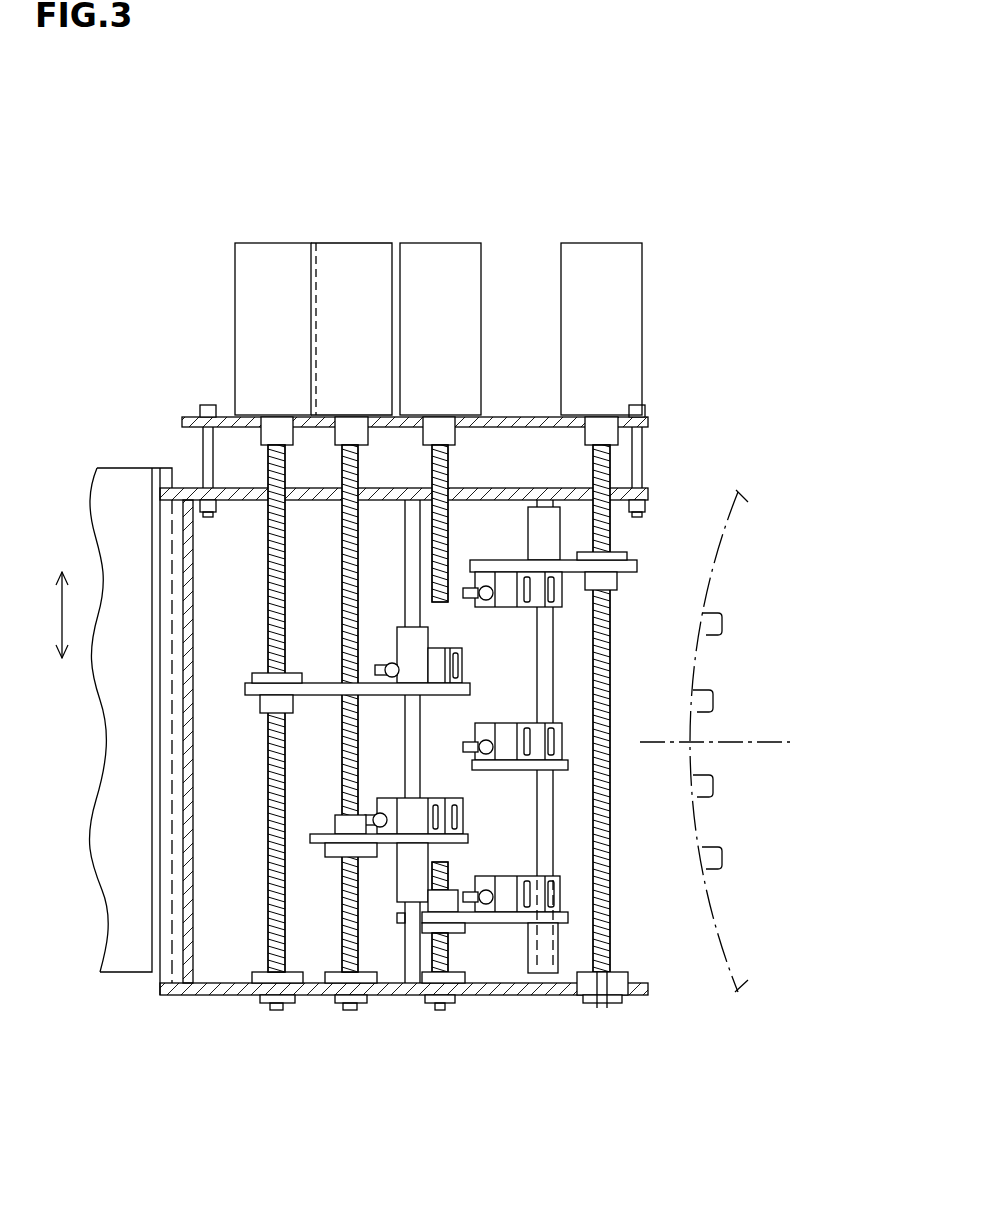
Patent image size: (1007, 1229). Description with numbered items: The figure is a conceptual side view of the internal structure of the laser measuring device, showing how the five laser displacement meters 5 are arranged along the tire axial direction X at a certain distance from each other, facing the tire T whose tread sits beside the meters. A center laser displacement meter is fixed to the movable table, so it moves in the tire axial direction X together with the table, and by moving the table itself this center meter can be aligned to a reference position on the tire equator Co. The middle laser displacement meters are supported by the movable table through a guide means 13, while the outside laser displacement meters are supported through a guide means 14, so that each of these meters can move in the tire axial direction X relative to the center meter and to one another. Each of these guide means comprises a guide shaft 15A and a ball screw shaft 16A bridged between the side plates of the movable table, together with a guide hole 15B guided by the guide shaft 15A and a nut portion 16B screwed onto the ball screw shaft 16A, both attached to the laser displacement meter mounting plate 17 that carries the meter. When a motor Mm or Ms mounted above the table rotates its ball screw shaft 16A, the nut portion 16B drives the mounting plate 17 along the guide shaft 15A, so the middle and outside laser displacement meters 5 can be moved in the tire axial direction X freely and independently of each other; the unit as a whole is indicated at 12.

The tire holding unit 12 is at (175, 352).
The guide means 13 is at (255, 720).
The guide means 14 is at (618, 538).
The guide shaft 15A is at (405, 537).
The guide hole 15B is at (405, 607).
The ball screw shaft 16A is at (268, 880).
The nut portion 16B is at (262, 703).
The laser displacement meter mounting plate 17 is at (320, 682).
The laser displacement meters 5 is at (562, 597).
The motor Mm is at (272, 258).
The motor Ms is at (448, 258).
The tire T is at (700, 987).
The tire equator Co is at (767, 744).
The tire axial direction X is at (51, 615).